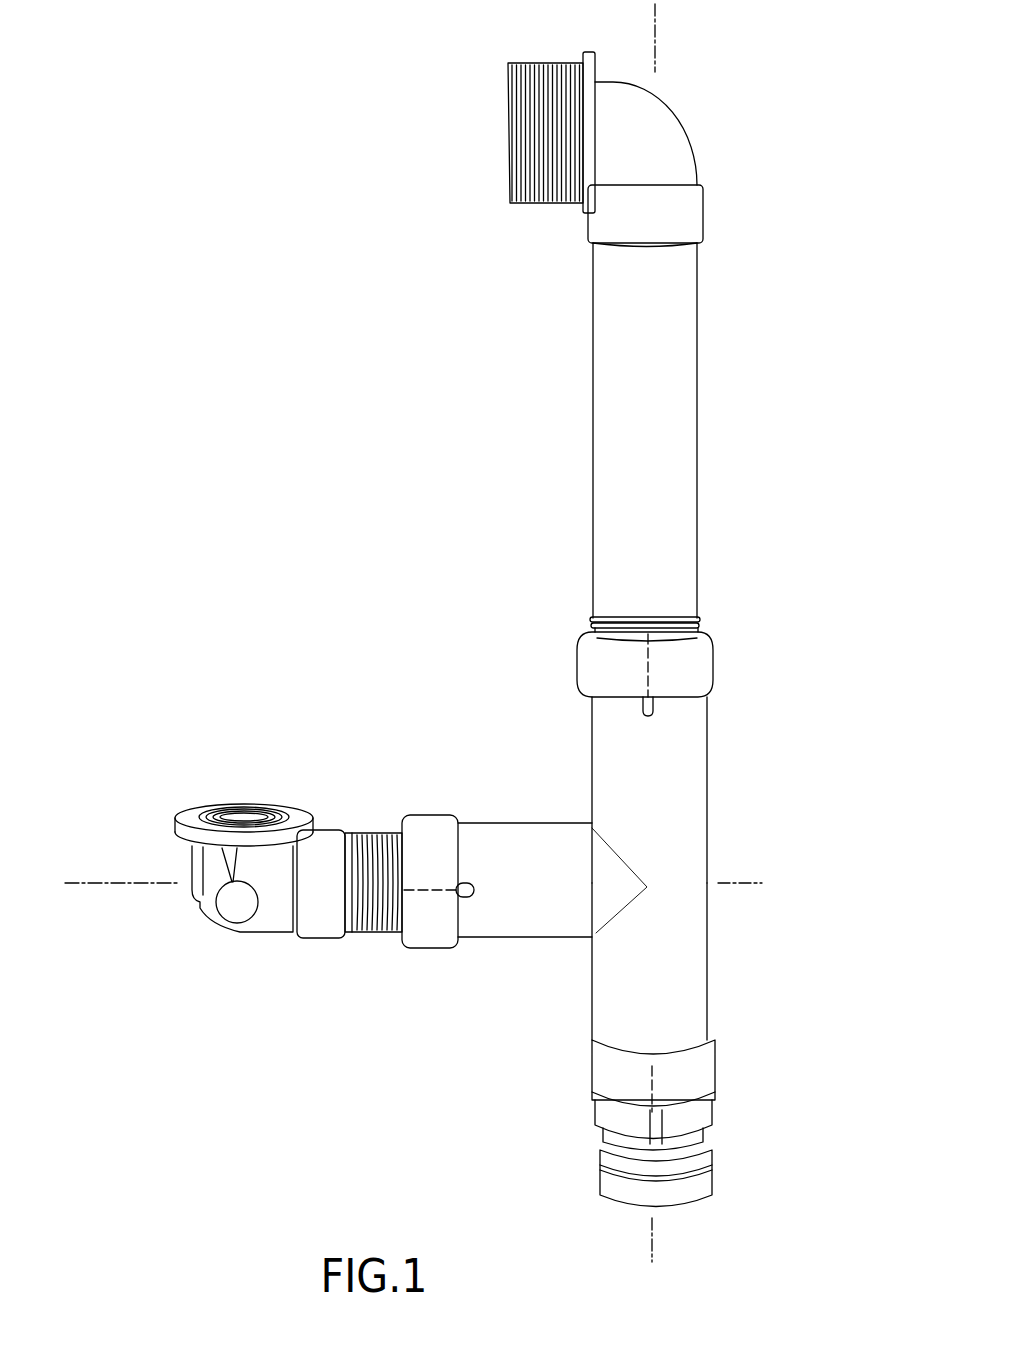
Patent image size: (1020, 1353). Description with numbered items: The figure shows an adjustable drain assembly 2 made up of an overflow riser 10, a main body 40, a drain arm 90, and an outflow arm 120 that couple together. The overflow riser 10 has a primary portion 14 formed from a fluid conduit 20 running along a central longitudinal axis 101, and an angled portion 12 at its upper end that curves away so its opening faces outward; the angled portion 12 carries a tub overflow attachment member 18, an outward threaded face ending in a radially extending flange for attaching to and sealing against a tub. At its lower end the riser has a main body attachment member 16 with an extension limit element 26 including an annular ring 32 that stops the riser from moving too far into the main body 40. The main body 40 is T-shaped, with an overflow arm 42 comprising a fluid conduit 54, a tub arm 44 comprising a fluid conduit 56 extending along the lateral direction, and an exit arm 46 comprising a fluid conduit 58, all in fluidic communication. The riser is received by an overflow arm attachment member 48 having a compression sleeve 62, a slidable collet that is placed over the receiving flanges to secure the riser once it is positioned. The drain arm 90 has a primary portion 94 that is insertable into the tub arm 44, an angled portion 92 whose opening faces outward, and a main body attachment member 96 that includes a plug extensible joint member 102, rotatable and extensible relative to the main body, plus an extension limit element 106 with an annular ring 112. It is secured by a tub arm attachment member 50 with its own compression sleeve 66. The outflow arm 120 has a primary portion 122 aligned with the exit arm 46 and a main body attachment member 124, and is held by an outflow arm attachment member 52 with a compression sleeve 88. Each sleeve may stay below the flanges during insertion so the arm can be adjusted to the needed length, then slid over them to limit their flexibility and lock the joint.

The adjustable drain assembly 2 is at (150, 213).
The overflow riser 10 is at (832, 68).
The angled portion 12 is at (672, 122).
The primary portion 14 is at (589, 401).
The main body attachment member 16 is at (625, 672).
The tub overflow attachment member 18 is at (510, 218).
The fluid conduit 20 is at (607, 476).
The extension limit element 26 is at (593, 592).
The annular ring 32 is at (590, 620).
The main body 40 is at (832, 632).
The overflow arm 42 is at (640, 868).
The tub arm 44 is at (536, 818).
The exit arm 46 is at (707, 961).
The overflow arm attachment member 48 is at (553, 677).
The tub arm attachment member 50 is at (438, 897).
The outflow arm attachment member 52 is at (664, 1159).
The fluid conduit 54 is at (700, 840).
The fluid conduit 56 is at (530, 922).
The fluid conduit 58 is at (700, 1018).
The compression sleeve 62 is at (712, 660).
The compression sleeve 66 is at (433, 823).
The compression sleeve 88 is at (597, 1070).
The drain arm 90 is at (557, 736).
The angled portion 92 is at (212, 908).
The primary portion 94 is at (338, 945).
The main body attachment member 96 is at (390, 889).
The central longitudinal axis 101 is at (657, 10).
The plug extensible joint member 102 is at (105, 880).
The extension limit element 106 is at (390, 840).
The annular ring 112 is at (390, 882).
The outflow arm 120 is at (683, 1214).
The primary portion 122 is at (703, 1150).
The main body attachment member 124 is at (578, 1142).